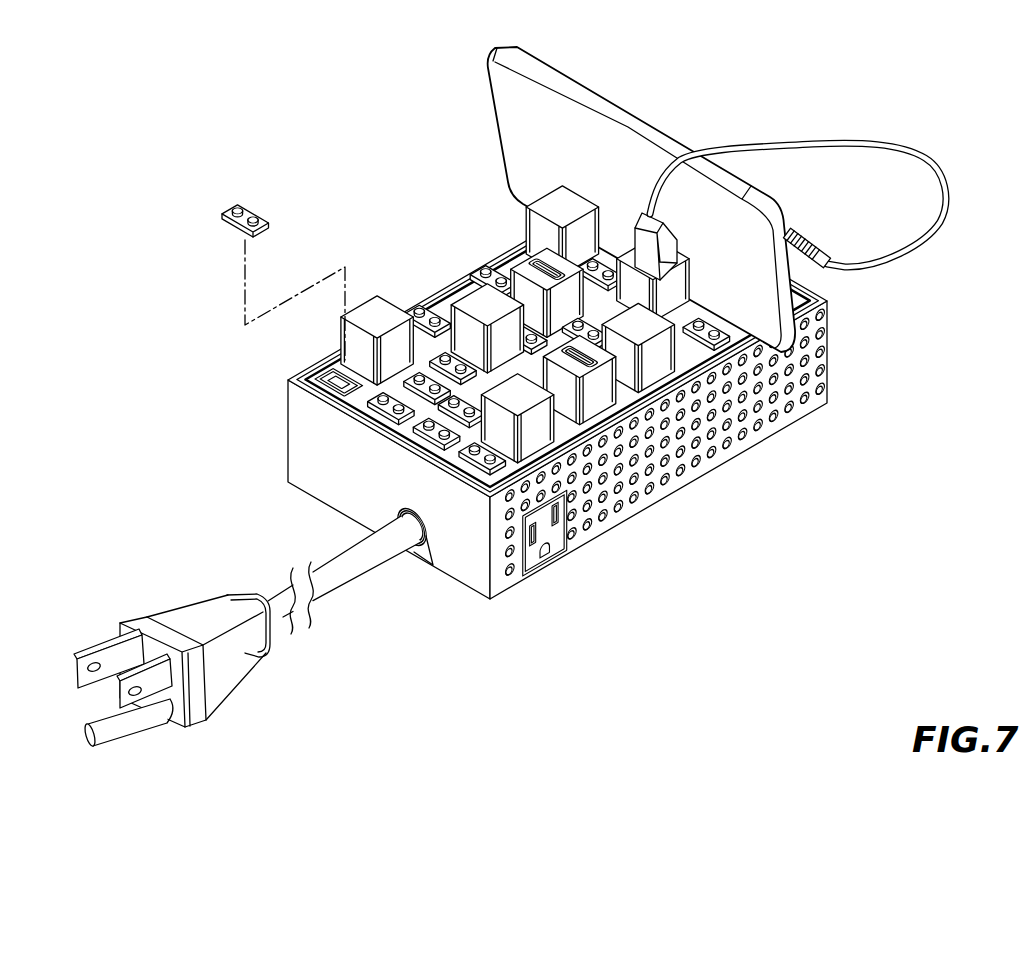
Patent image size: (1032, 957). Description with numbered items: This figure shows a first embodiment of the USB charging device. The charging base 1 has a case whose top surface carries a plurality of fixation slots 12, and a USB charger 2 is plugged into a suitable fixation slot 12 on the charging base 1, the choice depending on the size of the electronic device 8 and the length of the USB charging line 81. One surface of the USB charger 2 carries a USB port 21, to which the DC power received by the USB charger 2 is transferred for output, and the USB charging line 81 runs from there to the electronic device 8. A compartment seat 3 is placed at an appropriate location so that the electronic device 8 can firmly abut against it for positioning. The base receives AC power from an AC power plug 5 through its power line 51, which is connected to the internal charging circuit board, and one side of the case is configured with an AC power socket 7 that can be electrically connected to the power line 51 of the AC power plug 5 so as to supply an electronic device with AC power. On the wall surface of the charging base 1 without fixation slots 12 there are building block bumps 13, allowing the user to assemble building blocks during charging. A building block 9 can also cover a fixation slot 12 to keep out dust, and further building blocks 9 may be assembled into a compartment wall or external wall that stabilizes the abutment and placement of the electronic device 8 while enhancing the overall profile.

The charging base 1 is at (830, 358).
The fixation slot 12 is at (345, 384).
The building block bump 13 is at (775, 413).
The USB charger 2 is at (521, 268).
The USB port 21 is at (540, 262).
The compartment seat 3 is at (477, 297).
The AC power plug 5 is at (193, 613).
The power line 51 is at (320, 578).
The AC power socket 7 is at (563, 530).
The electronic device 8 is at (629, 127).
The USB charging line 81 is at (913, 147).
The building block 9 is at (235, 208).